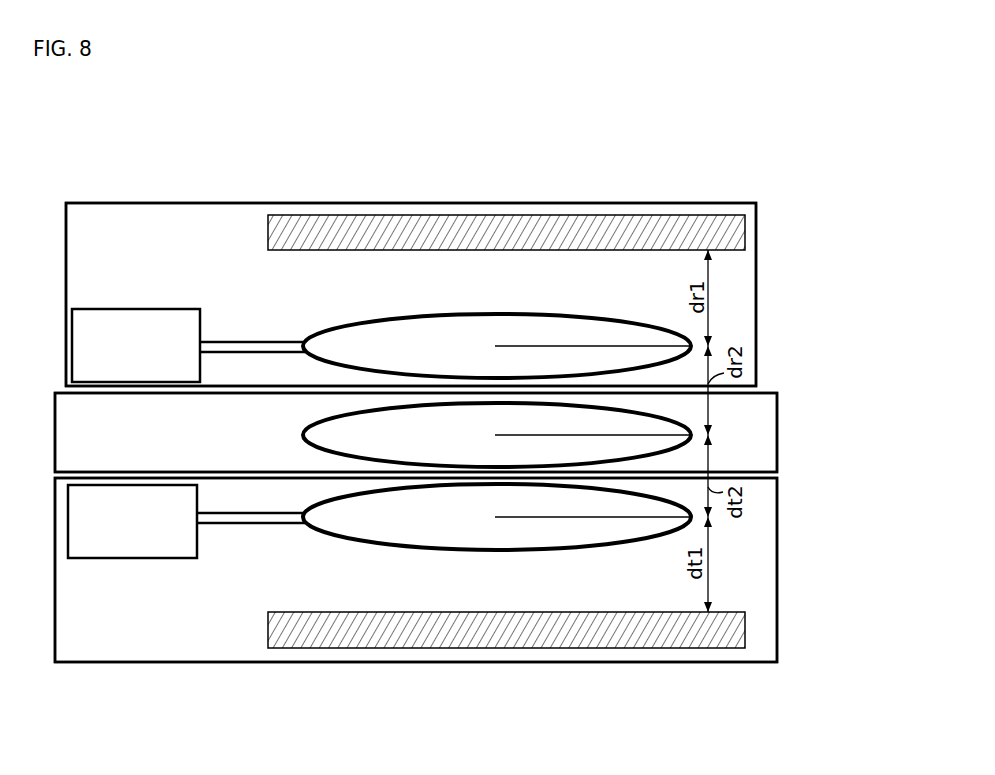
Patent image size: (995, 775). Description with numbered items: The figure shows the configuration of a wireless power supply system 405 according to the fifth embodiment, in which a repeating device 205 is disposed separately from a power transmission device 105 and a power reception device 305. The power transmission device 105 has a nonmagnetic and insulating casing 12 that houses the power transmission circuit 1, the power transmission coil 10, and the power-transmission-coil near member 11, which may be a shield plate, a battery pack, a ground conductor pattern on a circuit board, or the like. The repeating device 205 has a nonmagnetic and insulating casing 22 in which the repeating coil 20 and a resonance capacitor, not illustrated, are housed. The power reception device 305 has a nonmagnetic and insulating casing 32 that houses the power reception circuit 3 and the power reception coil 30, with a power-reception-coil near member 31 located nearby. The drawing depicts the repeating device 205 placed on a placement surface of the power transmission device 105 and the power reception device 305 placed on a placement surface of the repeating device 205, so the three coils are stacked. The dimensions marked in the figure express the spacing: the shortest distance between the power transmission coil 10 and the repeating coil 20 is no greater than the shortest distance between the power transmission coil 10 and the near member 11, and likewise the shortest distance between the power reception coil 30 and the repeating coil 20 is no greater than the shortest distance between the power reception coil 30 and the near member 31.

The wireless power supply system 405 is at (748, 102).
The power reception device 305 is at (763, 290).
The casing 32 is at (756, 203).
The power-reception-coil near member 31 is at (745, 233).
The power reception coil 30 is at (312, 334).
The power reception circuit 3 is at (134, 309).
The repeating device 205 is at (787, 430).
The casing 22 is at (777, 393).
The repeating coil 20 is at (308, 426).
The power transmission device 105 is at (793, 537).
The casing 12 is at (777, 662).
The power-transmission-coil near member 11 is at (745, 612).
The power transmission coil 10 is at (306, 508).
The power transmission circuit 1 is at (129, 558).